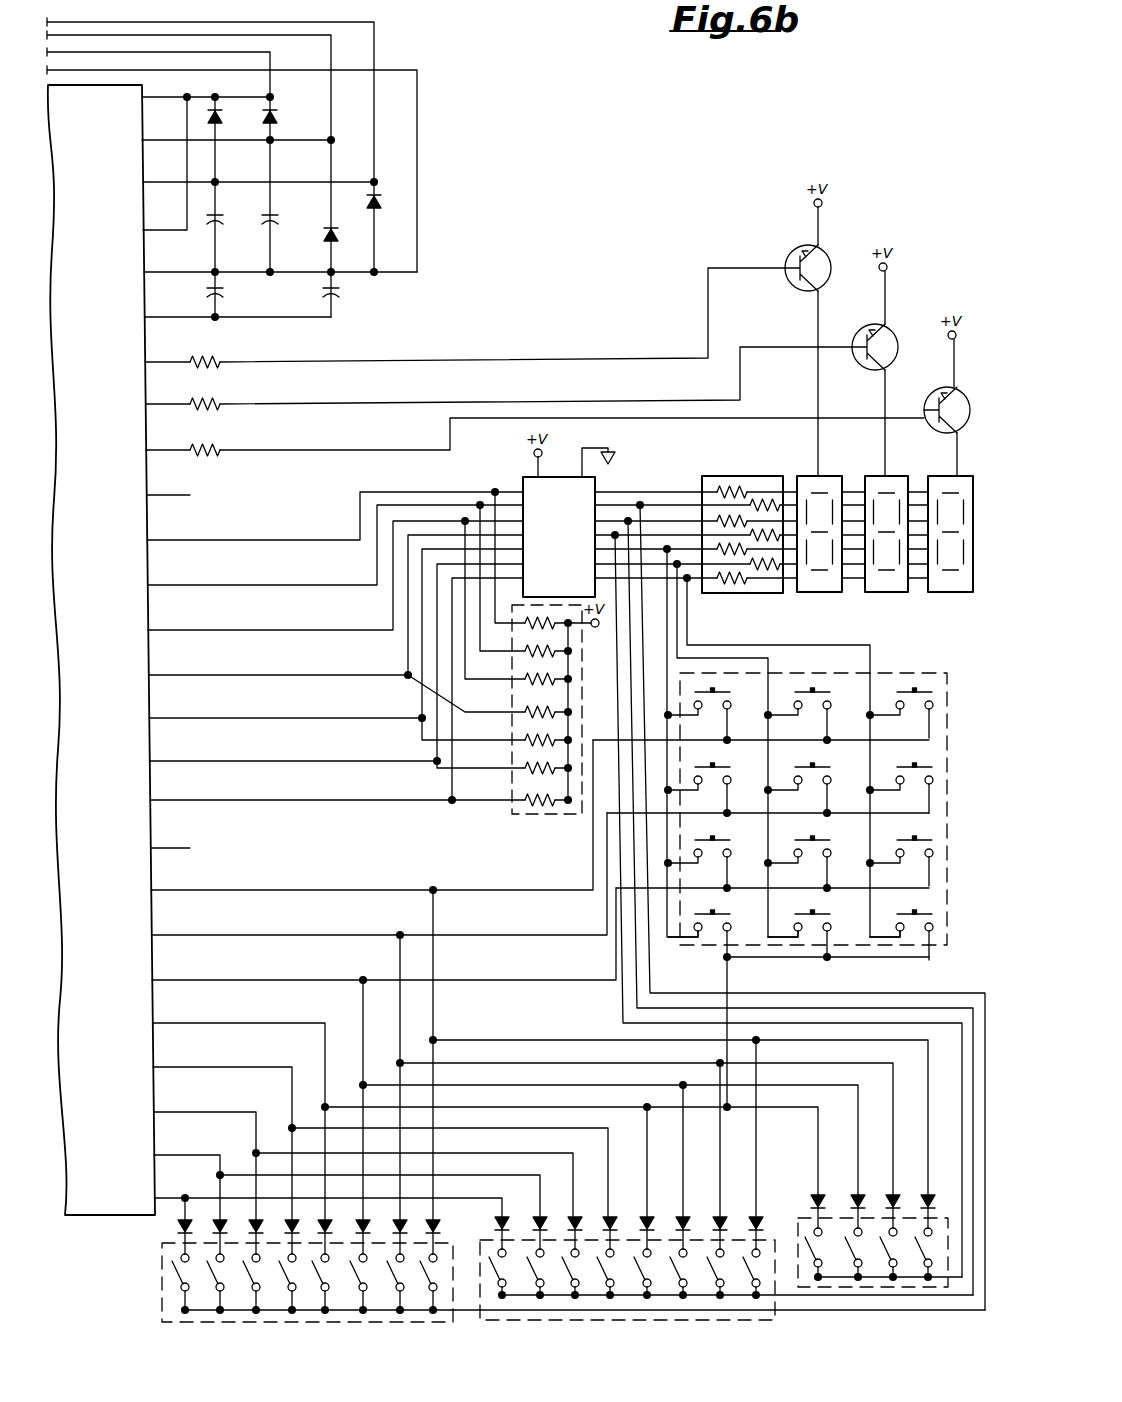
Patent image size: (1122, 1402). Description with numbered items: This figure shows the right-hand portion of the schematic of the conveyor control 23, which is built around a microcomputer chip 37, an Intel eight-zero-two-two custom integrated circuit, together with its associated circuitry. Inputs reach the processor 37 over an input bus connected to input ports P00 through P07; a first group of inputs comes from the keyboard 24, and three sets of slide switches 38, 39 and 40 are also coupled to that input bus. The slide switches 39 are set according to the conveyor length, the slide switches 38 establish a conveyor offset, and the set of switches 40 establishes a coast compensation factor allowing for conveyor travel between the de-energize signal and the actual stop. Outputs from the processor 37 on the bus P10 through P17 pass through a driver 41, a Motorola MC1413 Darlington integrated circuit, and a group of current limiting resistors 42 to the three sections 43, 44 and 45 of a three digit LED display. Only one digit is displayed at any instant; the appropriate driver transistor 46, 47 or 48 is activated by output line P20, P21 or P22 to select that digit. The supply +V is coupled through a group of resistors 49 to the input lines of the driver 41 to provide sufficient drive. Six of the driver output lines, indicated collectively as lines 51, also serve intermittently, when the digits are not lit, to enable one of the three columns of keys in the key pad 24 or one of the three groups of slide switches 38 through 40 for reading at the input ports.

The control 23 is at (634, 97).
The keyboard 24 is at (890, 674).
The microcomputer chip 37 is at (92, 1217).
The slide switches 38 is at (155, 1285).
The slide switches 39 is at (520, 1326).
The set of switches 40 is at (868, 1290).
The driver 41 is at (523, 480).
The current limiting resistors 42 is at (740, 456).
The section of LED display 43 is at (820, 598).
The section of LED display 44 is at (888, 598).
The section of LED display 45 is at (946, 603).
The driver transistor 46 is at (799, 242).
The driver transistor 47 is at (870, 314).
The driver transistor 48 is at (921, 394).
The group of resistors 49 is at (538, 816).
The lines 51 is at (607, 665).